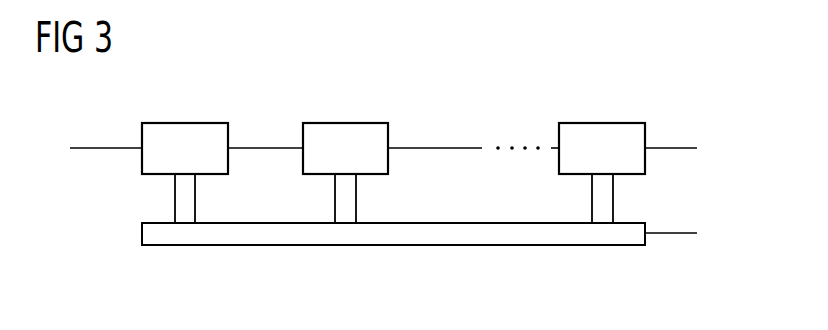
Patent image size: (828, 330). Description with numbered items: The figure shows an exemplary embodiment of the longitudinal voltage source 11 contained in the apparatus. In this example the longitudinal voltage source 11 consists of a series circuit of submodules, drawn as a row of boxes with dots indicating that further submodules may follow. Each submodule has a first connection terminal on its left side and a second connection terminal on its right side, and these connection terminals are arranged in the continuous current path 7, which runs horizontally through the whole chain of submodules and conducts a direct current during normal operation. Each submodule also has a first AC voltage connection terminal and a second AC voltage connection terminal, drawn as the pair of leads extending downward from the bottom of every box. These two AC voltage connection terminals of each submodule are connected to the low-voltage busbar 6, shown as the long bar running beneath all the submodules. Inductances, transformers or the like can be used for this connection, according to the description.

The longitudinal voltage source 11 is at (653, 85).
The continuous current path 7 is at (83, 151).
The low-voltage busbar 6 is at (423, 246).